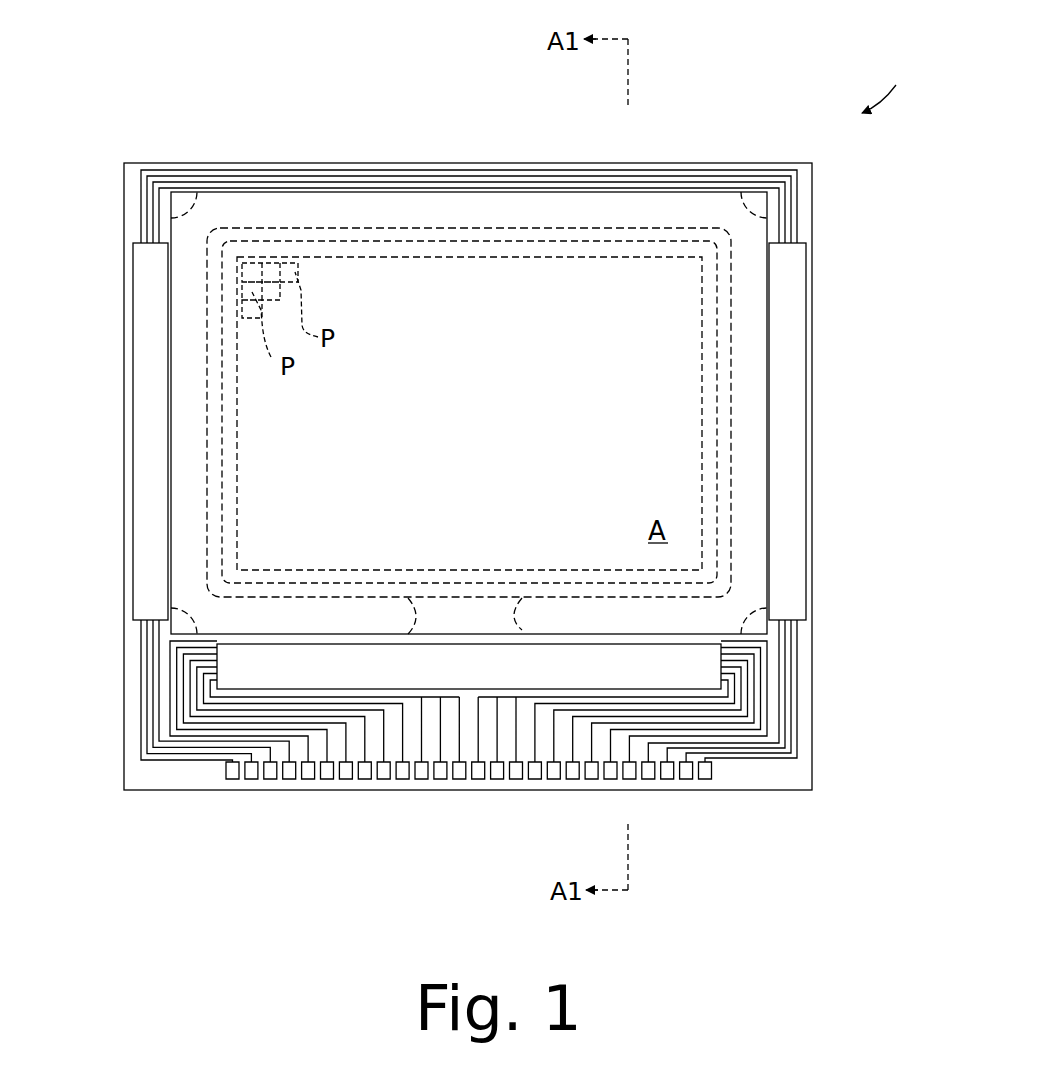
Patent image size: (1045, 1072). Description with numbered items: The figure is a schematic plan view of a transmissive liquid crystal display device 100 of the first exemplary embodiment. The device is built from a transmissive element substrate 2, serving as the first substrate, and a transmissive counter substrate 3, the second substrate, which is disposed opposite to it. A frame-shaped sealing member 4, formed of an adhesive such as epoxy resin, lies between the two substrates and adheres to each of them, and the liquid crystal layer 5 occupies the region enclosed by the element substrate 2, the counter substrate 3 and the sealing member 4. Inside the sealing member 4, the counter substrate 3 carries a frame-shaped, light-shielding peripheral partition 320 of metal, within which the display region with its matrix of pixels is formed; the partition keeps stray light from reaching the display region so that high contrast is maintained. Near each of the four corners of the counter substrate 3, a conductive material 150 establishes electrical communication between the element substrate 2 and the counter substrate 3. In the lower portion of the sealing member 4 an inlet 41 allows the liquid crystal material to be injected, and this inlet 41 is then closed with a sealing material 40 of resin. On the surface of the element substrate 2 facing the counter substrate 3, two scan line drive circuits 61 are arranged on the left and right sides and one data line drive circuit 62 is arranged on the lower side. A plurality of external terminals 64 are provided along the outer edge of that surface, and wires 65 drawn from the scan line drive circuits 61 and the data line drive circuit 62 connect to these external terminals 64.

The liquid crystal display device 100 is at (890, 83).
The element substrate 2 is at (690, 160).
The counter substrate 3 is at (626, 189).
The sealing member 4 is at (570, 212).
The liquid crystal layer 5 is at (450, 330).
The peripheral partition 320 is at (512, 245).
The wires 65 is at (348, 182).
The scan line drive circuits 61 is at (805, 492).
The data line drive circuit 62 is at (412, 665).
The external terminals 64 is at (337, 778).
The conductive material 150 is at (760, 628).
The sealing material 40 is at (478, 640).
The inlet 41 is at (520, 630).